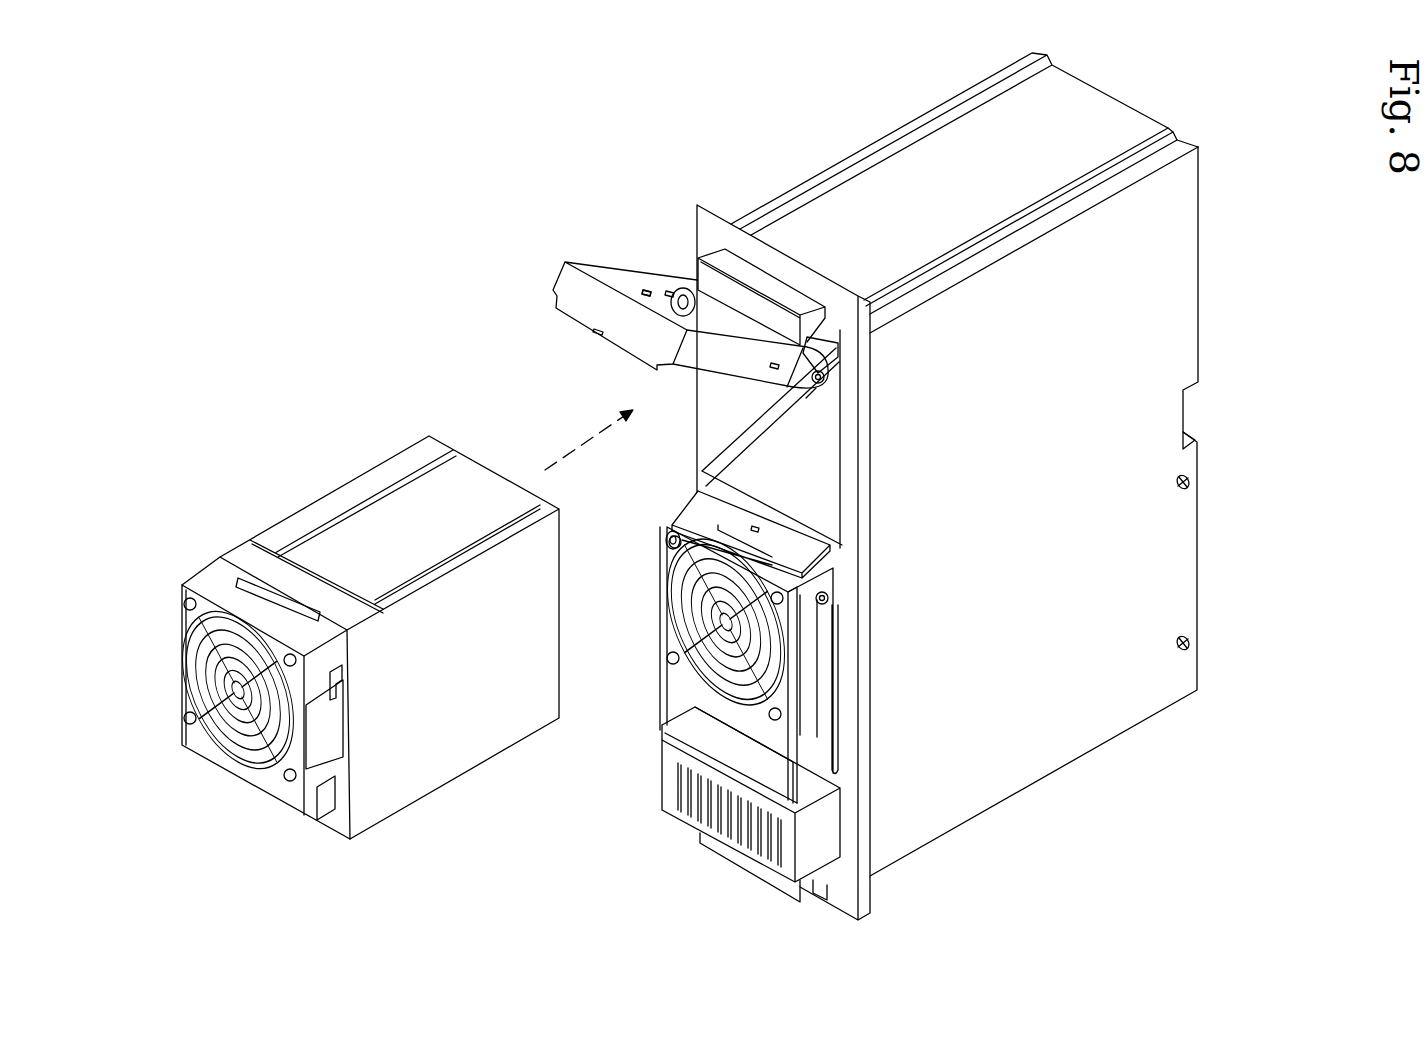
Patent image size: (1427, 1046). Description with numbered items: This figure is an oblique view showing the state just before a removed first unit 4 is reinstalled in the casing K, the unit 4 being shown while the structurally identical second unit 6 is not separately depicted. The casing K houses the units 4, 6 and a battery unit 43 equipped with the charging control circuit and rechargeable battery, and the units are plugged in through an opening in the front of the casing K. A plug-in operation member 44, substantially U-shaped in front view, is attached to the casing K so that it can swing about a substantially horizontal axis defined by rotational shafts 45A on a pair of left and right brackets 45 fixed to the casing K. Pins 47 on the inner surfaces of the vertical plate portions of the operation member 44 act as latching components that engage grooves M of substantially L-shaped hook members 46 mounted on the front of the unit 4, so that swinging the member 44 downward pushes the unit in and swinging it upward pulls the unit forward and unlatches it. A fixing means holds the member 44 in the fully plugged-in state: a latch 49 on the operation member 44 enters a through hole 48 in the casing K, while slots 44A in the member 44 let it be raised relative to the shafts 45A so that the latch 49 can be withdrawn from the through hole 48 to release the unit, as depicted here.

The first unit 4 is at (333, 487).
The second unit 6 is at (660, 652).
The battery unit 43 is at (832, 825).
The plug-in operation member 44 is at (560, 286).
The slots 44A is at (672, 290).
The brackets 45 is at (685, 290).
The rotational shafts 45A is at (824, 382).
The hook members 46 is at (345, 724).
The pins 47 is at (646, 290).
The through hole 48 is at (760, 528).
The latch 49 is at (597, 334).
The casing K is at (1180, 330).
The grooves M is at (345, 690).